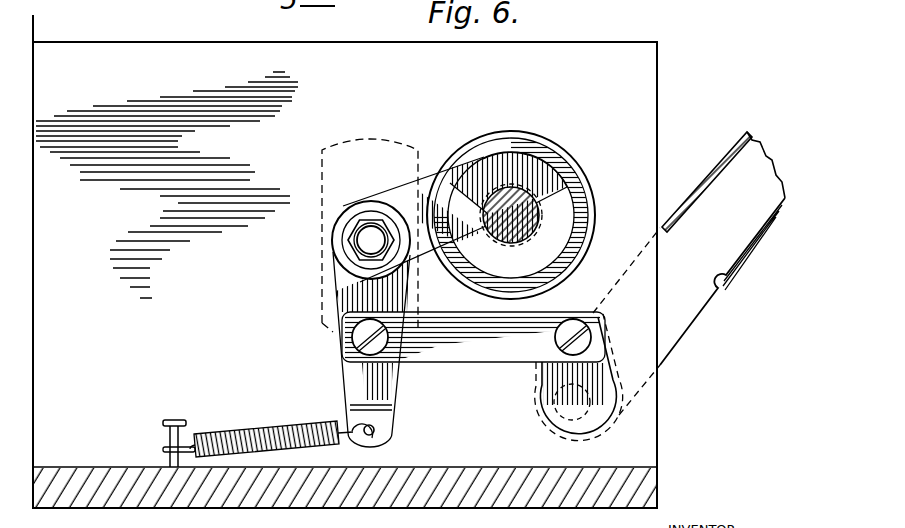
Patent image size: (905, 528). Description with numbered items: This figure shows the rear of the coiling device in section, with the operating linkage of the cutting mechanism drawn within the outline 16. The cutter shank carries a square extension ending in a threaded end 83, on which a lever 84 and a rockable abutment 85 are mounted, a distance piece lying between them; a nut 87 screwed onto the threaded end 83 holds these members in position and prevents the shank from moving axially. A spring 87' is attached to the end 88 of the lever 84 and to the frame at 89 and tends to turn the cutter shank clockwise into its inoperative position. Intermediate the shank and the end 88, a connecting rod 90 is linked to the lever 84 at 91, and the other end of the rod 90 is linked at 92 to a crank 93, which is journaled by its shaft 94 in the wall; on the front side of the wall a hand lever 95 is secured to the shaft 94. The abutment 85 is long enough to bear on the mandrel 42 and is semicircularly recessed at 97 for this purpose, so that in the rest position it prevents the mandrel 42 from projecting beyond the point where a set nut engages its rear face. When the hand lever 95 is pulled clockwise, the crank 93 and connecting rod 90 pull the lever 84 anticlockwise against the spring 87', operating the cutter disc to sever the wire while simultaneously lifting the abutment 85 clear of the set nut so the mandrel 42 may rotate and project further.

The housing outline 16 is at (322, 145).
The mandrel 42 is at (539, 212).
The threaded end 83 is at (371, 234).
The lever 84 is at (340, 298).
The rockable abutment 85 is at (427, 178).
The nut 87 is at (337, 240).
The spring 87' is at (271, 422).
The end of lever 88 is at (380, 431).
The frame attachment point 89 is at (186, 443).
The connecting rod 90 is at (473, 352).
The link point 91 is at (352, 340).
The link point 92 is at (572, 322).
The crank 93 is at (607, 380).
The shaft 94 is at (558, 405).
The hand lever 95 is at (700, 322).
The semicircular recess 97 is at (528, 180).